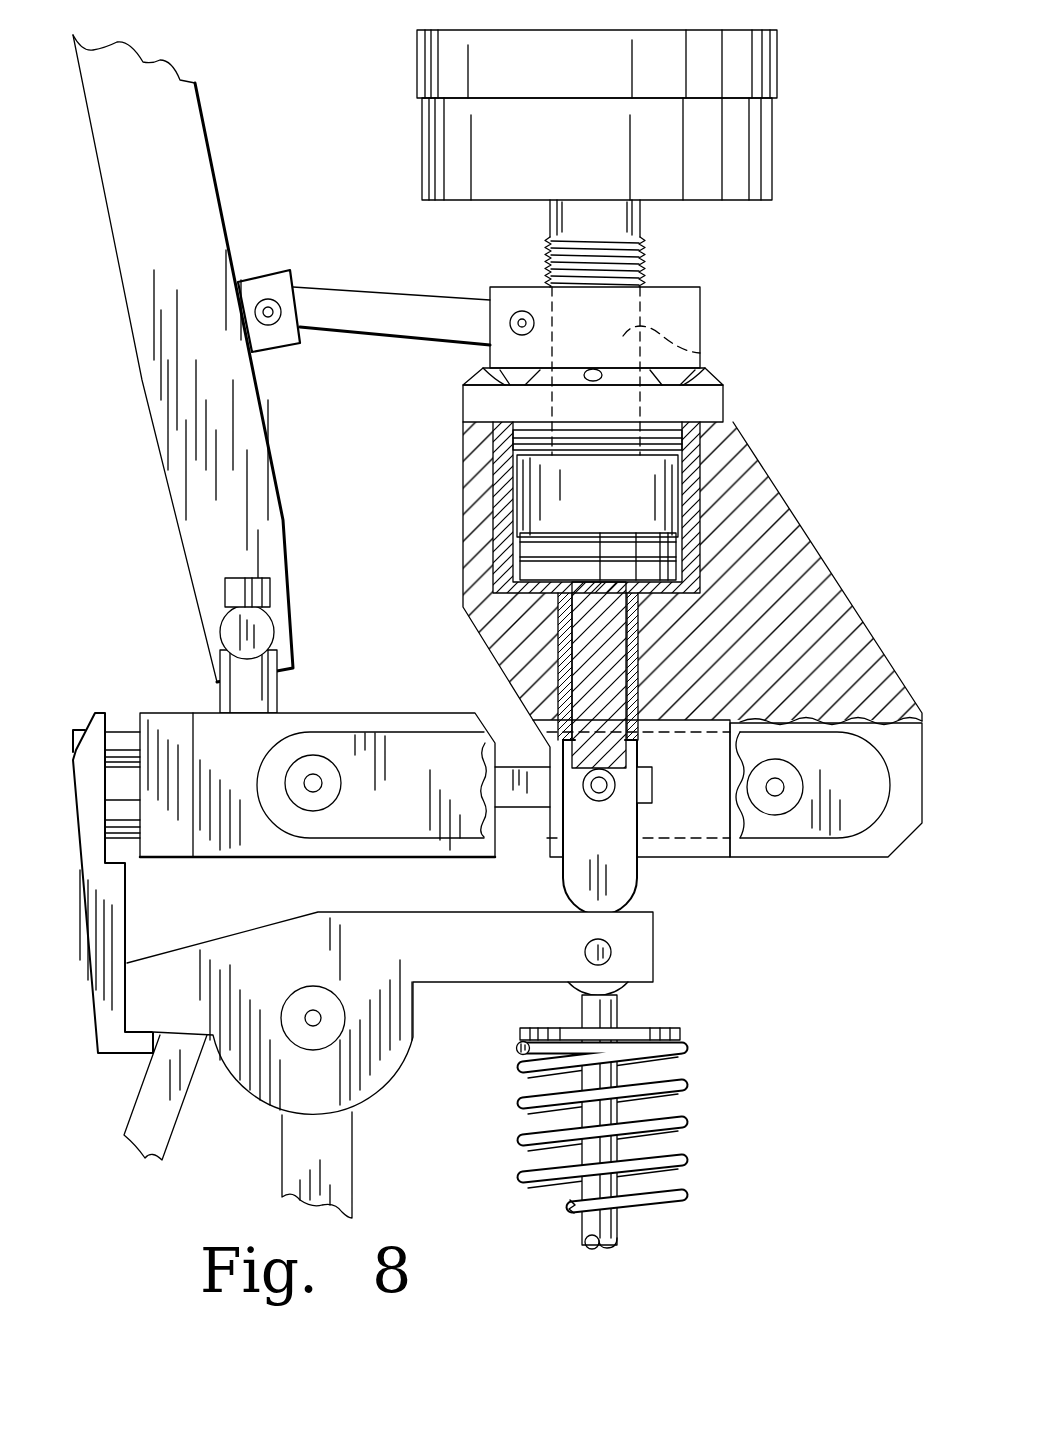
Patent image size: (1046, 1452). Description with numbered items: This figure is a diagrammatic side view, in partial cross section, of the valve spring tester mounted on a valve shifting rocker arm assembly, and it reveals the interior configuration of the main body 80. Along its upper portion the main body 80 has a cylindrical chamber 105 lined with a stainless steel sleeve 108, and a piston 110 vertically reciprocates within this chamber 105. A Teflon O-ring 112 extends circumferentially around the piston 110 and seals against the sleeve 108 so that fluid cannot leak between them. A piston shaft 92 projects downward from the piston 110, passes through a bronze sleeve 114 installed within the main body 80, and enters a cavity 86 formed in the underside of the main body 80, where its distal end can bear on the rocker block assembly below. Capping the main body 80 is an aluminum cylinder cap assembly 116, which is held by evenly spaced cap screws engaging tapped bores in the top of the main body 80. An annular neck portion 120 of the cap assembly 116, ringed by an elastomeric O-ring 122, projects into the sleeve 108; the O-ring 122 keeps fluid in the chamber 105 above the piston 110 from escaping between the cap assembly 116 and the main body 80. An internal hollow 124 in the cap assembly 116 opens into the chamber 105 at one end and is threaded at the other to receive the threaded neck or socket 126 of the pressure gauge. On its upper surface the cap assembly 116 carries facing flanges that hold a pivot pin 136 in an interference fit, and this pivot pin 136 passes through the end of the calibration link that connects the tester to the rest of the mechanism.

The main body 80 is at (790, 580).
The cavity 86 is at (695, 820).
The piston shaft 92 is at (605, 665).
The cylindrical chamber 105 is at (617, 502).
The stainless steel sleeve 108 is at (495, 484).
The piston 110 is at (550, 570).
The O-ring 112 is at (662, 552).
The bronze sleeve 114 is at (640, 647).
The cylinder cap assembly 116 is at (700, 300).
The annular neck portion 120 is at (633, 458).
The O-ring 122 is at (653, 430).
The internal hollow 124 is at (700, 353).
The threaded neck or socket 126 is at (630, 258).
The pivot pin 136 is at (522, 311).